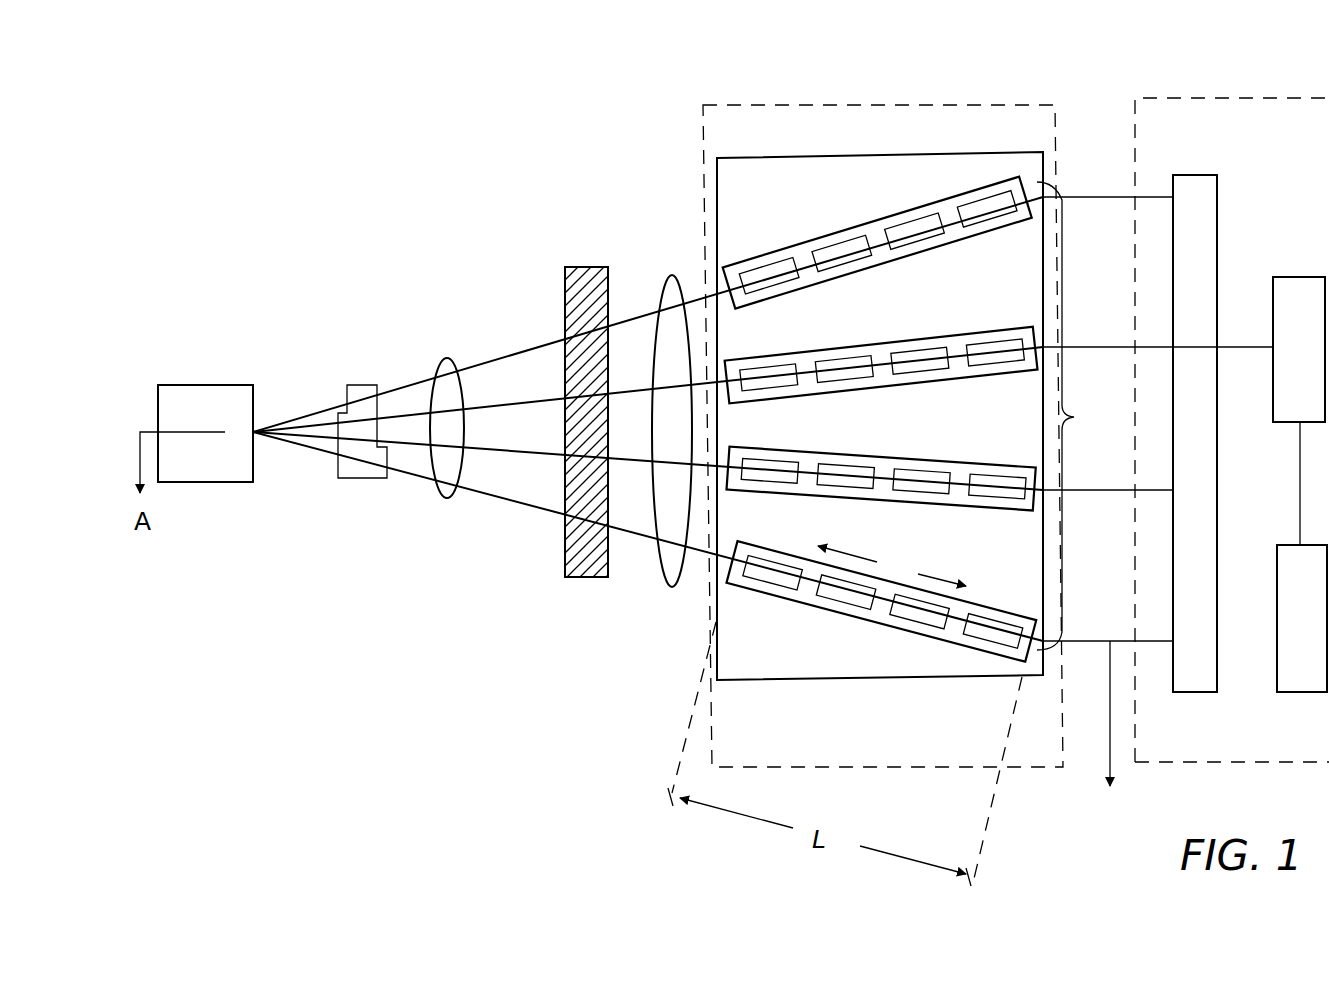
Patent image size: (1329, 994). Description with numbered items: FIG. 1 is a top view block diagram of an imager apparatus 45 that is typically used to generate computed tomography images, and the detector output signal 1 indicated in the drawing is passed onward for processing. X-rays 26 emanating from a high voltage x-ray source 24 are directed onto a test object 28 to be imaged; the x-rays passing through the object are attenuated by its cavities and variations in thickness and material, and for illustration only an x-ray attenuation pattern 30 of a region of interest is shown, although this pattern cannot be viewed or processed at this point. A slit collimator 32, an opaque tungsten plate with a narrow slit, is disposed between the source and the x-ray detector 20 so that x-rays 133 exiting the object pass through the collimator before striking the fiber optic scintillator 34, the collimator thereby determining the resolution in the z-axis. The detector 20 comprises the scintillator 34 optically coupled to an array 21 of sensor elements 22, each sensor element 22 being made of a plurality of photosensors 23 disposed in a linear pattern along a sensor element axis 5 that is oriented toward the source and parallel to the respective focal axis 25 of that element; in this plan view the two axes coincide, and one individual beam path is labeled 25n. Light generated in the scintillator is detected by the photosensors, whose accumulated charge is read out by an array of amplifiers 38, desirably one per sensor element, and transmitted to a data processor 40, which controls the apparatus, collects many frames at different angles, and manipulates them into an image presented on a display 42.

The output signal 1 is at (1121, 722).
The sensor element axis 5 is at (892, 565).
The x-ray detector 20 is at (883, 436).
The array of sensor elements 21 is at (1074, 417).
The sensor element 22 is at (887, 213).
The photosensor 23 is at (977, 198).
The x-ray source 24 is at (225, 480).
The focal axis 25 is at (794, 265).
The n-th light ray 25n is at (545, 512).
The x-rays 26 is at (648, 419).
The test object 28 is at (367, 458).
The x-ray attenuation pattern 30 is at (449, 500).
The slit collimator 32 is at (591, 266).
The scintillator 34 is at (735, 214).
The array of amplifiers 38 is at (1193, 185).
The data processor 40 is at (1299, 349).
The display 42 is at (1302, 557).
The imager apparatus 45 is at (364, 200).
The x-rays 133 is at (667, 587).